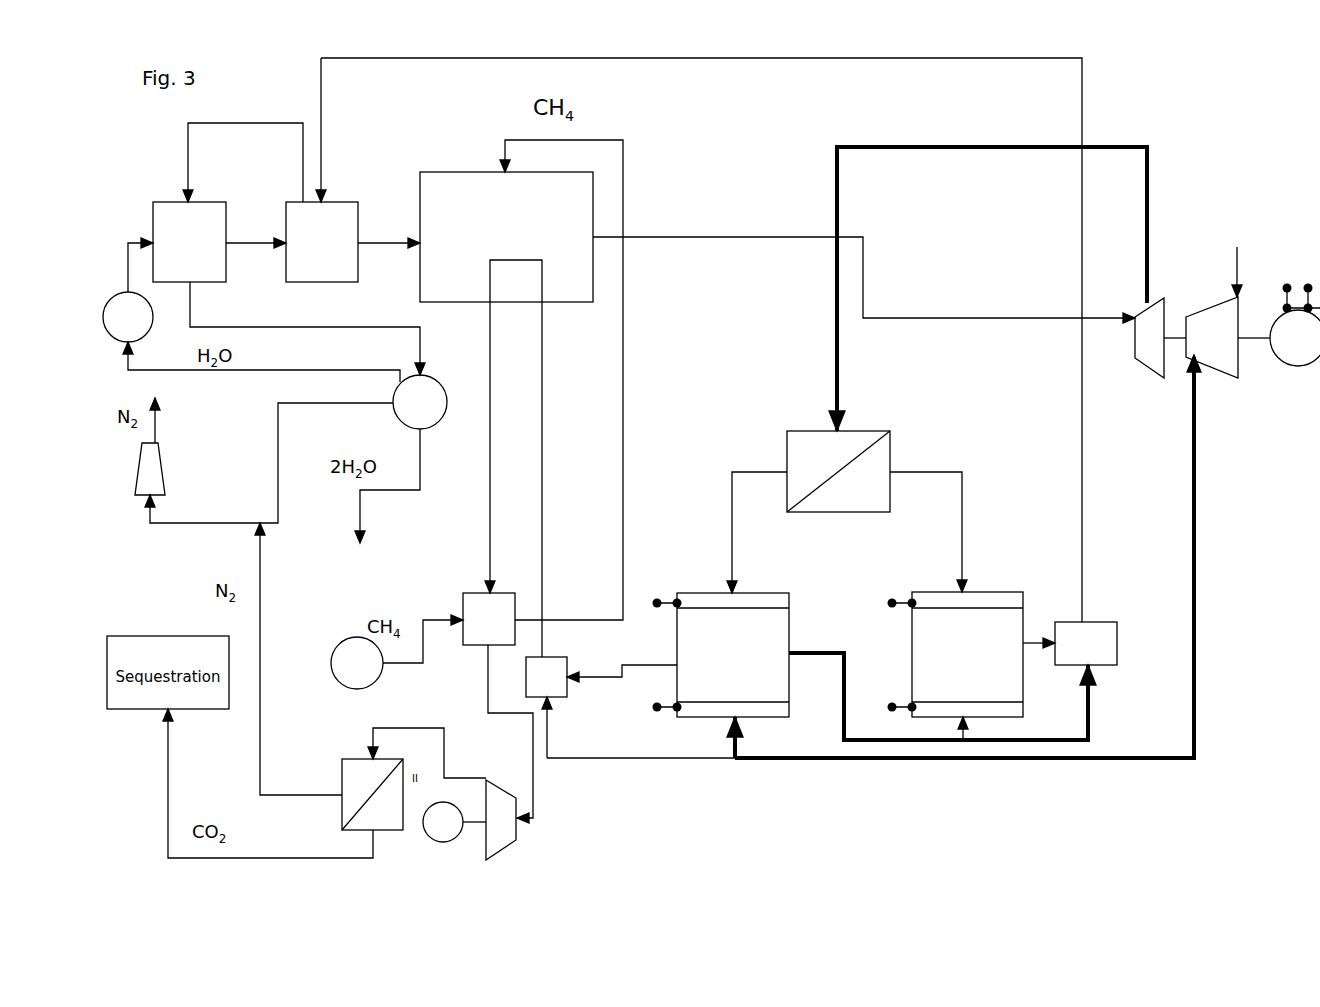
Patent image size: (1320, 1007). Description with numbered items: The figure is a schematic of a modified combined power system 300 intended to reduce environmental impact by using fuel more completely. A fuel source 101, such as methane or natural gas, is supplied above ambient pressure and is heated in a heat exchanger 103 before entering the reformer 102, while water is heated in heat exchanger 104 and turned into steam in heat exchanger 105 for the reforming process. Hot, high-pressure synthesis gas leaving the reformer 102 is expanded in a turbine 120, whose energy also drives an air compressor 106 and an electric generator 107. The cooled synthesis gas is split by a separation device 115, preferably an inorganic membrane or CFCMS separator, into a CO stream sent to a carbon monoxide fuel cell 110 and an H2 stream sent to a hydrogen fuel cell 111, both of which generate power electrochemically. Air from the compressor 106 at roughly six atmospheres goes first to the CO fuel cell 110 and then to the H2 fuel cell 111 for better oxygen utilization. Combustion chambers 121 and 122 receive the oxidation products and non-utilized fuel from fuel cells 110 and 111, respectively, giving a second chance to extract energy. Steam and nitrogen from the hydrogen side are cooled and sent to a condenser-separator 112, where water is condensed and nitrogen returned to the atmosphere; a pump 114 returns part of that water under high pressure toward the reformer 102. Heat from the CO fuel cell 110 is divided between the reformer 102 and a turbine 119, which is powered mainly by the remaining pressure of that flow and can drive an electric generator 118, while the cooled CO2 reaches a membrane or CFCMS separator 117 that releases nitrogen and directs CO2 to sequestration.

The modified combined power system 300 is at (698, 840).
The fuel source 101 is at (357, 663).
The reformer 102 is at (506, 237).
The heat exchanger 103 is at (489, 619).
The heat exchanger 104 is at (189, 242).
The heat exchanger 105 is at (322, 242).
The air compressor 106 is at (1212, 337).
The electric generator 107 is at (1295, 325).
The carbon monoxide fuel cell 110 is at (721, 655).
The hydrogen fuel cell 111 is at (956, 654).
The condenser-separator 112 is at (420, 402).
The pump 114 is at (128, 317).
The separation device 115 is at (838, 471).
The membrane or CFCMS separator 117 is at (372, 794).
The electric generator 118 is at (443, 822).
The turbine 119 is at (501, 820).
The turbine 120 is at (1150, 338).
The combustion chamber 121 is at (546, 677).
The combustion chamber 122 is at (1086, 643).